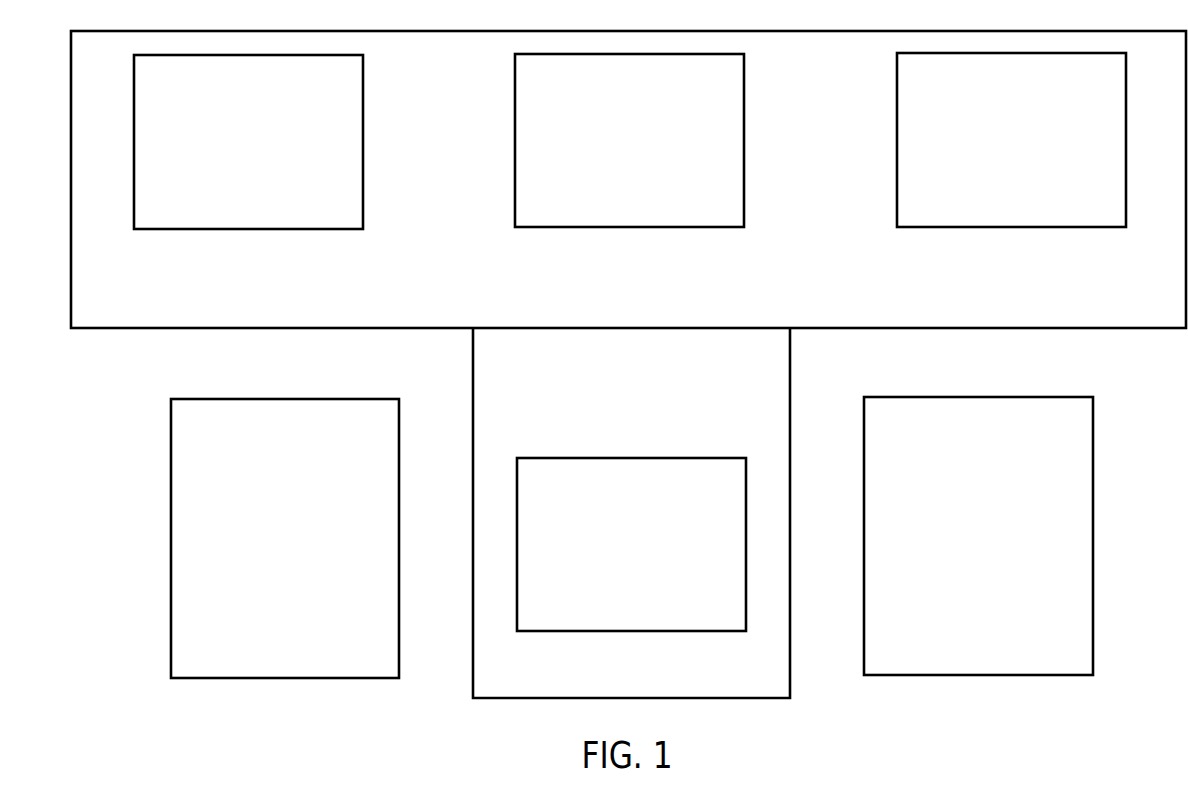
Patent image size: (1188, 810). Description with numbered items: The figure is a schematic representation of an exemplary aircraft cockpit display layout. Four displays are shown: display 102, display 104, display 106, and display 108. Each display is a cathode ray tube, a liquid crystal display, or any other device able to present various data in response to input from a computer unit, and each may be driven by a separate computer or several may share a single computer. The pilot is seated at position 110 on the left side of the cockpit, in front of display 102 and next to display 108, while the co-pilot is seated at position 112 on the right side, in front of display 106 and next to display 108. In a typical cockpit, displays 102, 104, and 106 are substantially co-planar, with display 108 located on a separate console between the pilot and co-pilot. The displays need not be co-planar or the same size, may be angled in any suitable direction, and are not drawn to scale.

The display 102 is at (241, 230).
The display 104 is at (634, 229).
The display 106 is at (1018, 228).
The display 108 is at (630, 457).
The pilot position 110 is at (262, 680).
The co-pilot position 112 is at (973, 677).